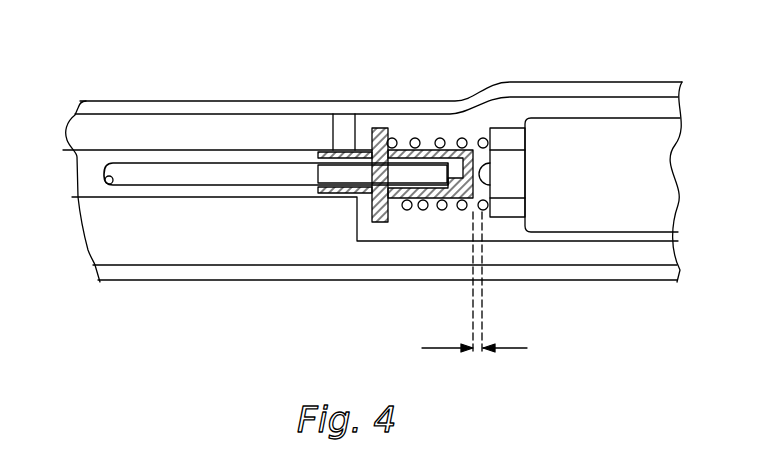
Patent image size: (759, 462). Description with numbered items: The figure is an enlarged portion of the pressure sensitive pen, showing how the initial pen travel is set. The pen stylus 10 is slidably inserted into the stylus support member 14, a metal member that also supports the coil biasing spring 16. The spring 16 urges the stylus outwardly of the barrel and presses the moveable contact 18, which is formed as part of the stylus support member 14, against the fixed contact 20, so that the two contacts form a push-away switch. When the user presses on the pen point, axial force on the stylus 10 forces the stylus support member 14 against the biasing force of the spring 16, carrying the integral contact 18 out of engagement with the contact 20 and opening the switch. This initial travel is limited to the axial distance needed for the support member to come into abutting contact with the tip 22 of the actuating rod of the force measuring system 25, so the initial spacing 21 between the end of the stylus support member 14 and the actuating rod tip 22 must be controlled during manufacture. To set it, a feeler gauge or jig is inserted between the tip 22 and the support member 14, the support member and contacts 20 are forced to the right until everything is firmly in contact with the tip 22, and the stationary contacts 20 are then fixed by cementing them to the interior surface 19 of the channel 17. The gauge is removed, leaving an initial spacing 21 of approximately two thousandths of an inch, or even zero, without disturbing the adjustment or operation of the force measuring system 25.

The pen stylus 10 is at (163, 178).
The stylus support member 14 is at (430, 149).
The coil biasing spring 16 is at (444, 139).
The channel 17 is at (220, 190).
The moveable contact 18 is at (372, 145).
The interior surface 19 is at (300, 197).
The fixed contact 20 is at (333, 150).
The initial spacing 21 is at (478, 352).
The tip of the actuating rod 22 is at (483, 180).
The force measuring system 25 is at (619, 217).